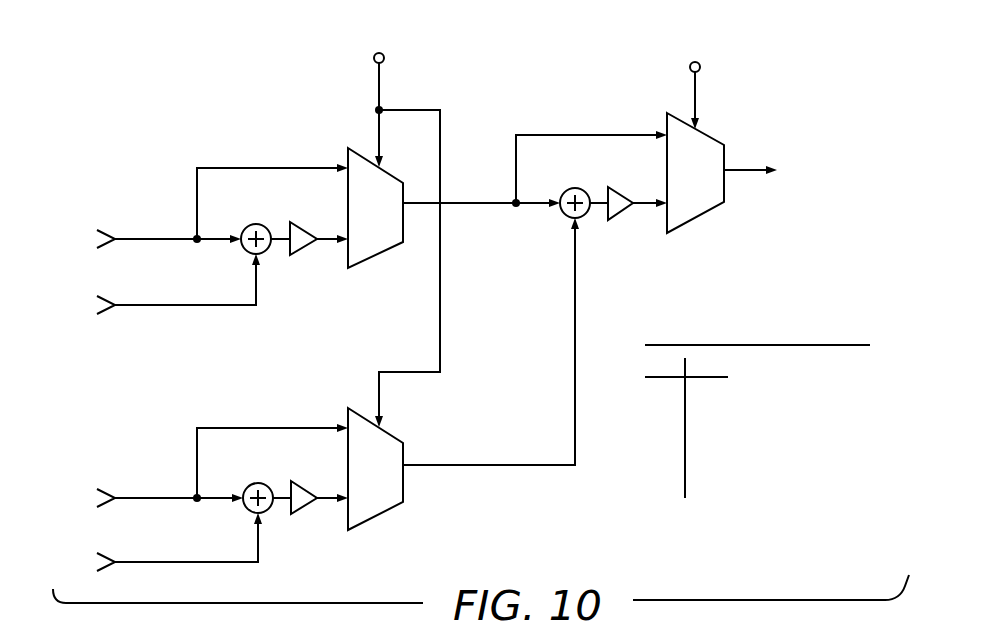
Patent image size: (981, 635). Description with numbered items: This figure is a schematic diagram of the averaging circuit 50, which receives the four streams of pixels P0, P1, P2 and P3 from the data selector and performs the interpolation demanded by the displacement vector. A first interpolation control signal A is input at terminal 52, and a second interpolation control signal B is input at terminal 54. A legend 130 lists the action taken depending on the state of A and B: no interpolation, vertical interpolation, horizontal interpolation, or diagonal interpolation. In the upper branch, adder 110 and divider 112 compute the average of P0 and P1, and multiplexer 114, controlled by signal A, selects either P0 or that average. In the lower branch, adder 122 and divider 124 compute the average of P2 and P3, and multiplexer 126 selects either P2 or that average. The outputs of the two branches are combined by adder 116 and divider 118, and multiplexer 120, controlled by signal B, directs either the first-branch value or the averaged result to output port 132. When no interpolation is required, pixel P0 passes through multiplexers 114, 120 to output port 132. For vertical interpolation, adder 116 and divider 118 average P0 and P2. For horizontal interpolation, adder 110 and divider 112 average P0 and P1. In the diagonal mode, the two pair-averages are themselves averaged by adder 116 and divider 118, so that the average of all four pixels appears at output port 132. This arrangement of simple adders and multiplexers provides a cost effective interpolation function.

The averaging circuit 50 is at (246, 140).
The terminal 52 is at (374, 58).
The terminal 54 is at (700, 66).
The adder 110 is at (252, 225).
The divider 112 is at (298, 254).
The multiplexer 114 is at (381, 259).
The adder 116 is at (563, 213).
The divider 118 is at (616, 219).
The multiplexer 120 is at (688, 223).
The adder 122 is at (269, 511).
The divider 124 is at (301, 512).
The multiplexer 126 is at (384, 513).
The legend 130 is at (633, 460).
The output port 132 is at (738, 174).